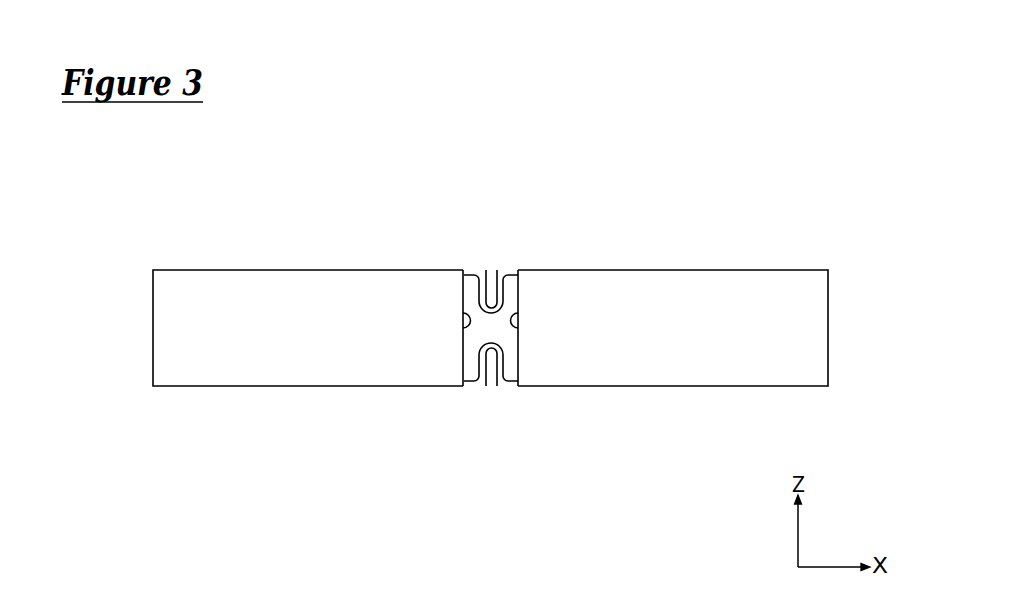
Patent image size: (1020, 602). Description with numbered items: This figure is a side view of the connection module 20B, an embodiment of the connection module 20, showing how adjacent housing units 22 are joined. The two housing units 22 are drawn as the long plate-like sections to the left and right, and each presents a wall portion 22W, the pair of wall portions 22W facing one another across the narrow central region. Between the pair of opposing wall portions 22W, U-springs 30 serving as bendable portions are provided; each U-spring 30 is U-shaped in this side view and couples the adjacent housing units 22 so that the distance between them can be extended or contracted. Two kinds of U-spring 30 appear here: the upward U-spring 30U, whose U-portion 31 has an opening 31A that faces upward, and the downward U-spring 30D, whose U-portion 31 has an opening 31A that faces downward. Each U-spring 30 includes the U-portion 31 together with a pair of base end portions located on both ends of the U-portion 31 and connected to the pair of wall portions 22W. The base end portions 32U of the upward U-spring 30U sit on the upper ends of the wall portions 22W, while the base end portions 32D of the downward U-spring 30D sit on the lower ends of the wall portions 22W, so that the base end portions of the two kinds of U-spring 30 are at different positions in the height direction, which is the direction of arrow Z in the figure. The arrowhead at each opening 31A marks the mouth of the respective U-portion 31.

The bus bar (variant B) 20B is at (490, 317).
The bus bar 20 is at (490, 332).
The housing unit 22 is at (317, 367).
The wall portion 22W is at (463, 313).
The U-spring 30 is at (493, 332).
The upward U-spring 30U is at (493, 219).
The downward U-spring 30D is at (493, 440).
The U-portion 31 is at (485, 292).
The opening 31A is at (495, 270).
The base end portion of upward U-spring 32U is at (468, 271).
The base end portion of downward U-spring 32D is at (468, 385).